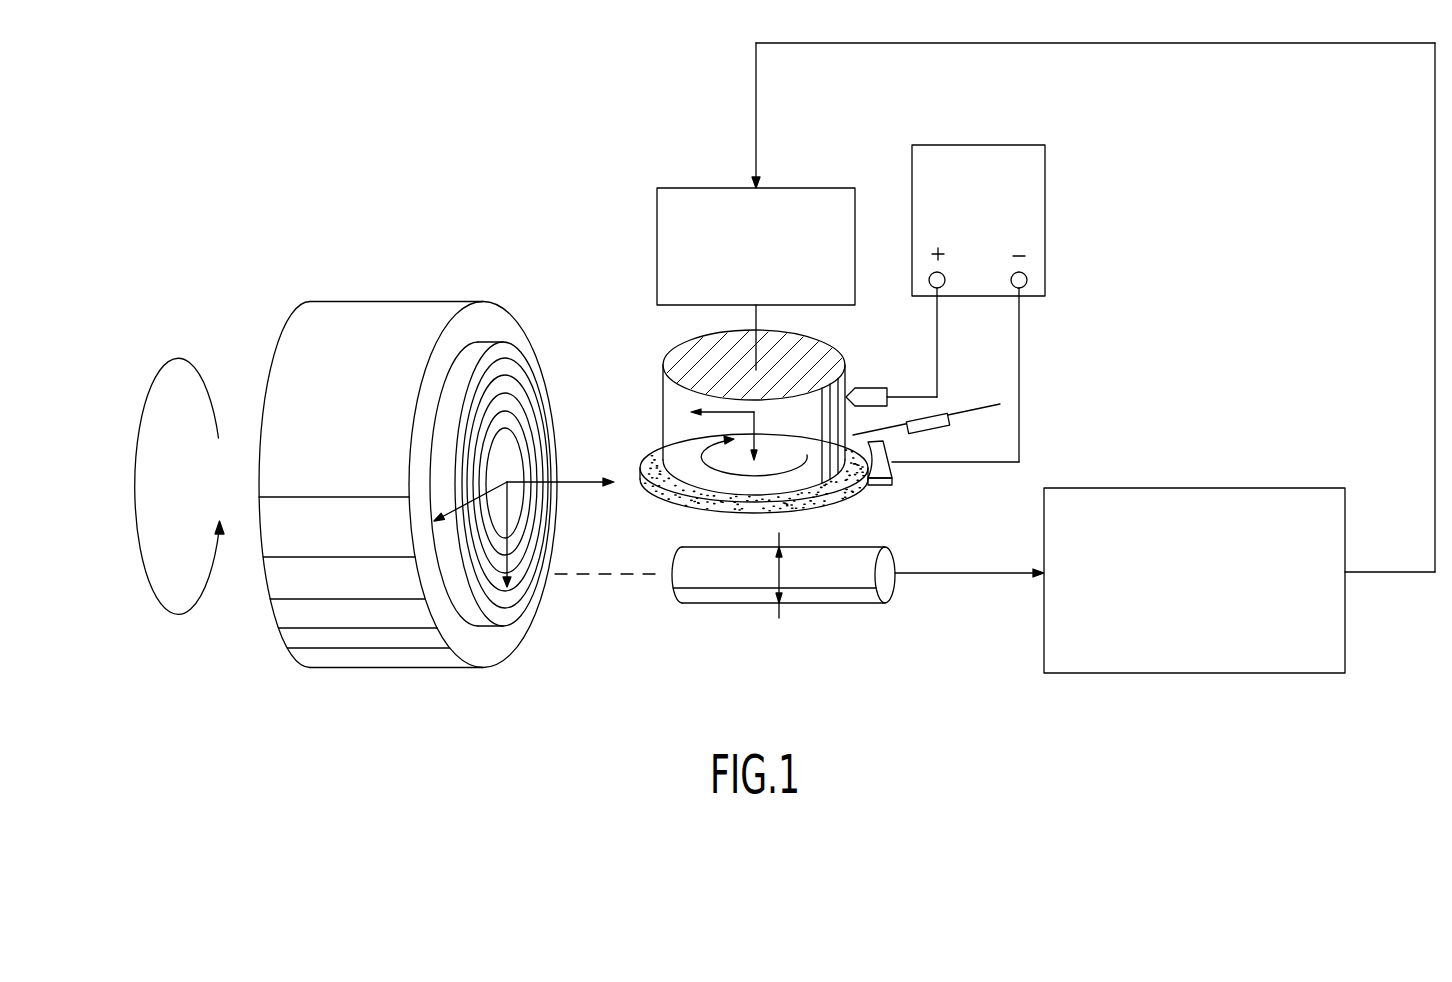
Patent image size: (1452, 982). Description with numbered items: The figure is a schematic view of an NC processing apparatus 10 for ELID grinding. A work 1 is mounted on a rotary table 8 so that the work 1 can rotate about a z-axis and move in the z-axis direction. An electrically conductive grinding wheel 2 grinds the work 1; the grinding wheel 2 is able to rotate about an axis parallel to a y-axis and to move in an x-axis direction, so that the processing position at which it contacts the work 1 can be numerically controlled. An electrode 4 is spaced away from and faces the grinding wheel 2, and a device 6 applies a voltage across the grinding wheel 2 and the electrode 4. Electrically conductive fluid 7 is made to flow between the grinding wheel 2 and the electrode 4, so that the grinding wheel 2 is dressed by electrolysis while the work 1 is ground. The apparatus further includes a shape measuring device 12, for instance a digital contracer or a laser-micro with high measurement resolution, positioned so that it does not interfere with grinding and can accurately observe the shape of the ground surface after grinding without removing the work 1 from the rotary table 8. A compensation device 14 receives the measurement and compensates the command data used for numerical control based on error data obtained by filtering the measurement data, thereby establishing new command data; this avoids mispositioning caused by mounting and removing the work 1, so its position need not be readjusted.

The work 1 is at (519, 353).
The grinding wheel 2 is at (667, 483).
The electrode 4 is at (880, 485).
The device for applying a voltage 6 is at (1025, 213).
The electrically conductive fluid 7 is at (890, 438).
The rotary table 8 is at (366, 317).
The NC processing apparatus 10 is at (703, 188).
The shape measuring device 12 is at (815, 583).
The compensation device 14 is at (1175, 615).